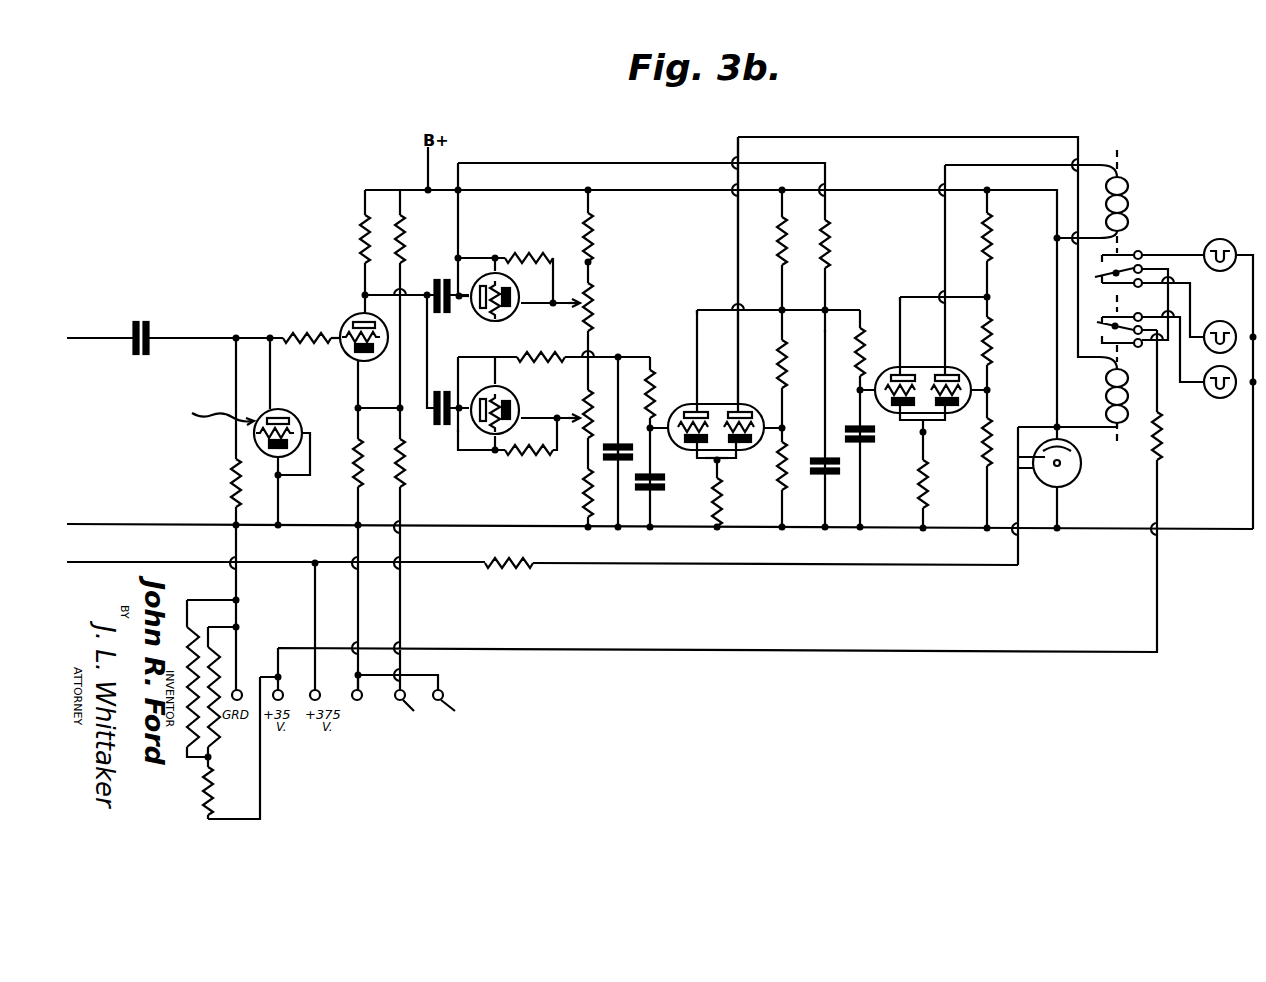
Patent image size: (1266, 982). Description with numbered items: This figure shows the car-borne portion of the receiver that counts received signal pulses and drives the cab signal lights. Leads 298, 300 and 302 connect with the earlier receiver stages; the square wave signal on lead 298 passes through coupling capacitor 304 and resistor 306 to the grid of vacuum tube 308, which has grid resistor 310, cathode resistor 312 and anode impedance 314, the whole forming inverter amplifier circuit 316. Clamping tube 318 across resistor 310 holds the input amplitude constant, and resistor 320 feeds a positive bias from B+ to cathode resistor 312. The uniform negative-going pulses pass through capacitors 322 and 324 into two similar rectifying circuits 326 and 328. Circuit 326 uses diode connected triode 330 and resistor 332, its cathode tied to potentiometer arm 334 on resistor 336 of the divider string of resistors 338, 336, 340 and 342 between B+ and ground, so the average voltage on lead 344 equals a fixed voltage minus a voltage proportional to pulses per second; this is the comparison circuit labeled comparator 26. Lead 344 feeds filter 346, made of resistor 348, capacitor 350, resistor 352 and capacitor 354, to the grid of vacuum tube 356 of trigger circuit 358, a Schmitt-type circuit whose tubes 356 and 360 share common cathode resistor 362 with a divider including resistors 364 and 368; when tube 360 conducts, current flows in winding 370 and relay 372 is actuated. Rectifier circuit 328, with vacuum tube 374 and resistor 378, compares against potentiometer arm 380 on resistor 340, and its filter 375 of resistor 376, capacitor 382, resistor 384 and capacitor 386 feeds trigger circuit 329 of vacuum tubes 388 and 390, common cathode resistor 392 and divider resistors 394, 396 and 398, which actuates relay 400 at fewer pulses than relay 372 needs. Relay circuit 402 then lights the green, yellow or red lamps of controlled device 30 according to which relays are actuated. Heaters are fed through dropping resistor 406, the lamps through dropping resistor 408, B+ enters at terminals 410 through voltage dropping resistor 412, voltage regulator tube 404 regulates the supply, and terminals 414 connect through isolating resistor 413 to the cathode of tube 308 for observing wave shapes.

The lead 298 is at (127, 332).
The lead 300 is at (98, 562).
The lead 302 is at (140, 528).
The coupling capacitor 304 is at (138, 313).
The resistor 306 is at (314, 325).
The vacuum tube 308 is at (345, 352).
The grid resistor 310 is at (231, 481).
The cathode resistor 312 is at (349, 471).
The anode impedance 314 is at (358, 251).
The vacuum tube circuit 316 is at (340, 290).
The clamping tube 318 is at (292, 424).
The resistor 320 is at (407, 240).
The capacitor 322 is at (436, 272).
The capacitor 324 is at (436, 422).
The rectifying circuit 326 is at (498, 257).
The rectifying circuit 328 is at (448, 475).
The trigger circuit 329 is at (695, 339).
The diode connected triode 330 is at (488, 322).
The resistor 332 is at (538, 256).
The potentiometer arm 334 is at (572, 310).
The resistor 336 is at (612, 298).
The resistor 338 is at (598, 250).
The resistor 340 is at (586, 401).
The resistor 342 is at (579, 494).
The lead 344 is at (708, 158).
The resistor capacitor filter 346 is at (854, 298).
The resistor 348 is at (834, 236).
The capacitor 350 is at (815, 478).
The resistor 352 is at (856, 345).
The capacitor 354 is at (865, 451).
The vacuum tube 356 is at (902, 366).
The trigger circuit 358 is at (925, 353).
The vacuum tube 360 is at (998, 324).
The common cathode resistor 362 is at (917, 476).
The resistor 364 is at (995, 224).
The resistor 368 is at (983, 456).
The winding 370 is at (1127, 180).
The relay 372 is at (1139, 143).
The vacuum tube 374 is at (506, 384).
The filter 375 is at (640, 518).
The resistor 376 is at (526, 348).
The resistor 378 is at (536, 456).
The potentiometer arm 380 is at (572, 418).
The capacitor 382 is at (635, 478).
The resistor 384 is at (656, 378).
The capacitor 386 is at (672, 478).
The vacuum tube 388 is at (700, 410).
The vacuum tube 390 is at (733, 456).
The common cathode resistor 392 is at (724, 494).
The resistor 394 is at (788, 452).
The resistor 396 is at (788, 386).
The resistor 398 is at (774, 256).
The relay 400 is at (1128, 432).
The relay circuit 402 is at (1234, 305).
The voltage regulator tube 404 is at (1094, 468).
The voltage dropping resistor 406 is at (213, 795).
The dropping resistor 408 is at (1160, 458).
The terminals 410 is at (353, 690).
The voltage dropping resistor 412 is at (515, 570).
The isolating resistor 413 is at (393, 470).
The terminals 414 is at (440, 704).
The comparator 26 is at (641, 174).
The controlled device 30 is at (1167, 265).